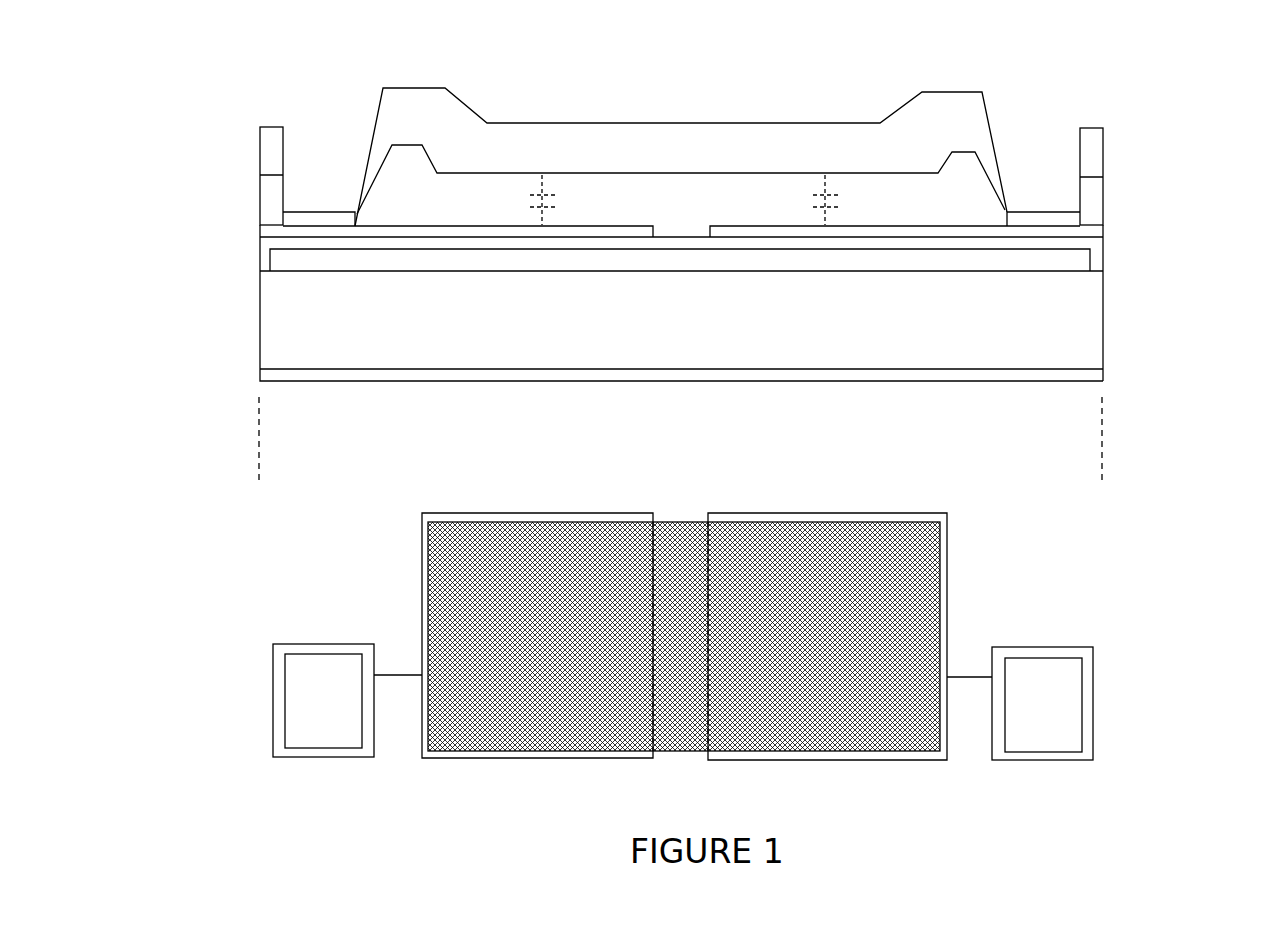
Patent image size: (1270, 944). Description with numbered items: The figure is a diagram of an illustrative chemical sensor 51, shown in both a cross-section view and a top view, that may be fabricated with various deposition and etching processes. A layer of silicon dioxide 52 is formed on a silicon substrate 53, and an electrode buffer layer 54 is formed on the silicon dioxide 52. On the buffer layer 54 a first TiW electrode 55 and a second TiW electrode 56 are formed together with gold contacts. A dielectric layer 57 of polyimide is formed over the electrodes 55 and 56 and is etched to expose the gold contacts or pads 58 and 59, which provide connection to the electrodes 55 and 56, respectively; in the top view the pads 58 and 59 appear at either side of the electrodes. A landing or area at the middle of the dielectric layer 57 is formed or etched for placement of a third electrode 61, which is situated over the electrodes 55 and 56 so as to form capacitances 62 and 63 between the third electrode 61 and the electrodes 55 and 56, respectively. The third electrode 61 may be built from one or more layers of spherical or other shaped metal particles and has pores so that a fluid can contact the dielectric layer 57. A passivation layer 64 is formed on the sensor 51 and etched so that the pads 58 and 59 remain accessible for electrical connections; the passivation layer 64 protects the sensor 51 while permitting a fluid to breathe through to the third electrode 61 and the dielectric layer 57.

The chemical sensor 51 is at (1117, 99).
The silicon dioxide layer 52 is at (1065, 263).
The silicon substrate 53 is at (697, 334).
The electrode buffer layer 54 is at (1100, 262).
The first TiW electrode 55 is at (265, 233).
The second TiW electrode 56 is at (1103, 235).
The dielectric layer 57 is at (260, 200).
The gold contact pad 58 is at (309, 213).
The gold contact pad 59 is at (1030, 215).
The third electrode 61 is at (645, 172).
The capacitance 62 is at (530, 203).
The capacitance 63 is at (845, 205).
The passivation layer 64 is at (263, 140).